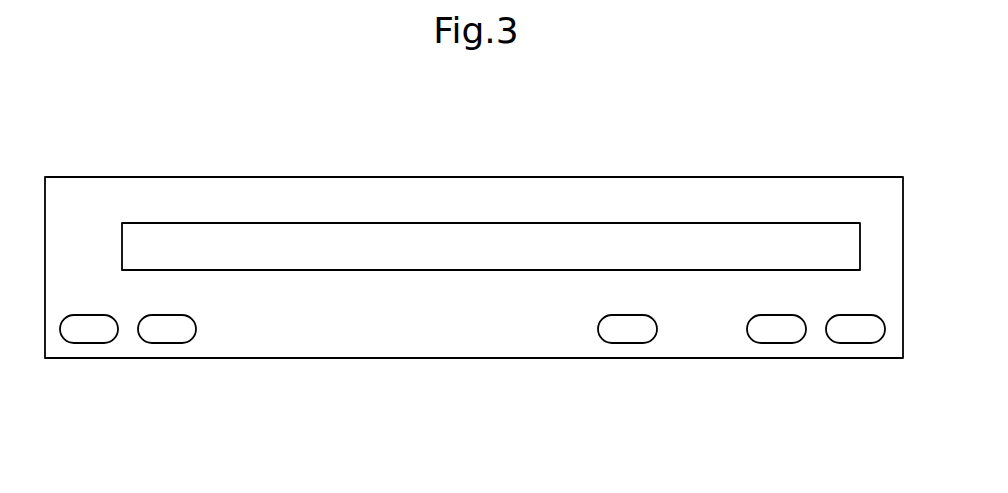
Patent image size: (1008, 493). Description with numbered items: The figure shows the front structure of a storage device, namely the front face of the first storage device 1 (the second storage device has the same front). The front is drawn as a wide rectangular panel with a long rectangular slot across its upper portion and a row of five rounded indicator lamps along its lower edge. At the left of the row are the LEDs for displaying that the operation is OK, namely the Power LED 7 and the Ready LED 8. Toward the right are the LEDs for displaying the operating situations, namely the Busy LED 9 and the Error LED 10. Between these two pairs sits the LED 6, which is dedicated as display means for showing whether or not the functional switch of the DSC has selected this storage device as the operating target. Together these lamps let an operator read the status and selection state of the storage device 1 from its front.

The first storage device 1 is at (568, 177).
The LED 6 is at (628, 343).
The Power LED 7 is at (90, 343).
The Ready LED 8 is at (172, 343).
The Busy LED 9 is at (773, 343).
The Error LED 10 is at (868, 343).